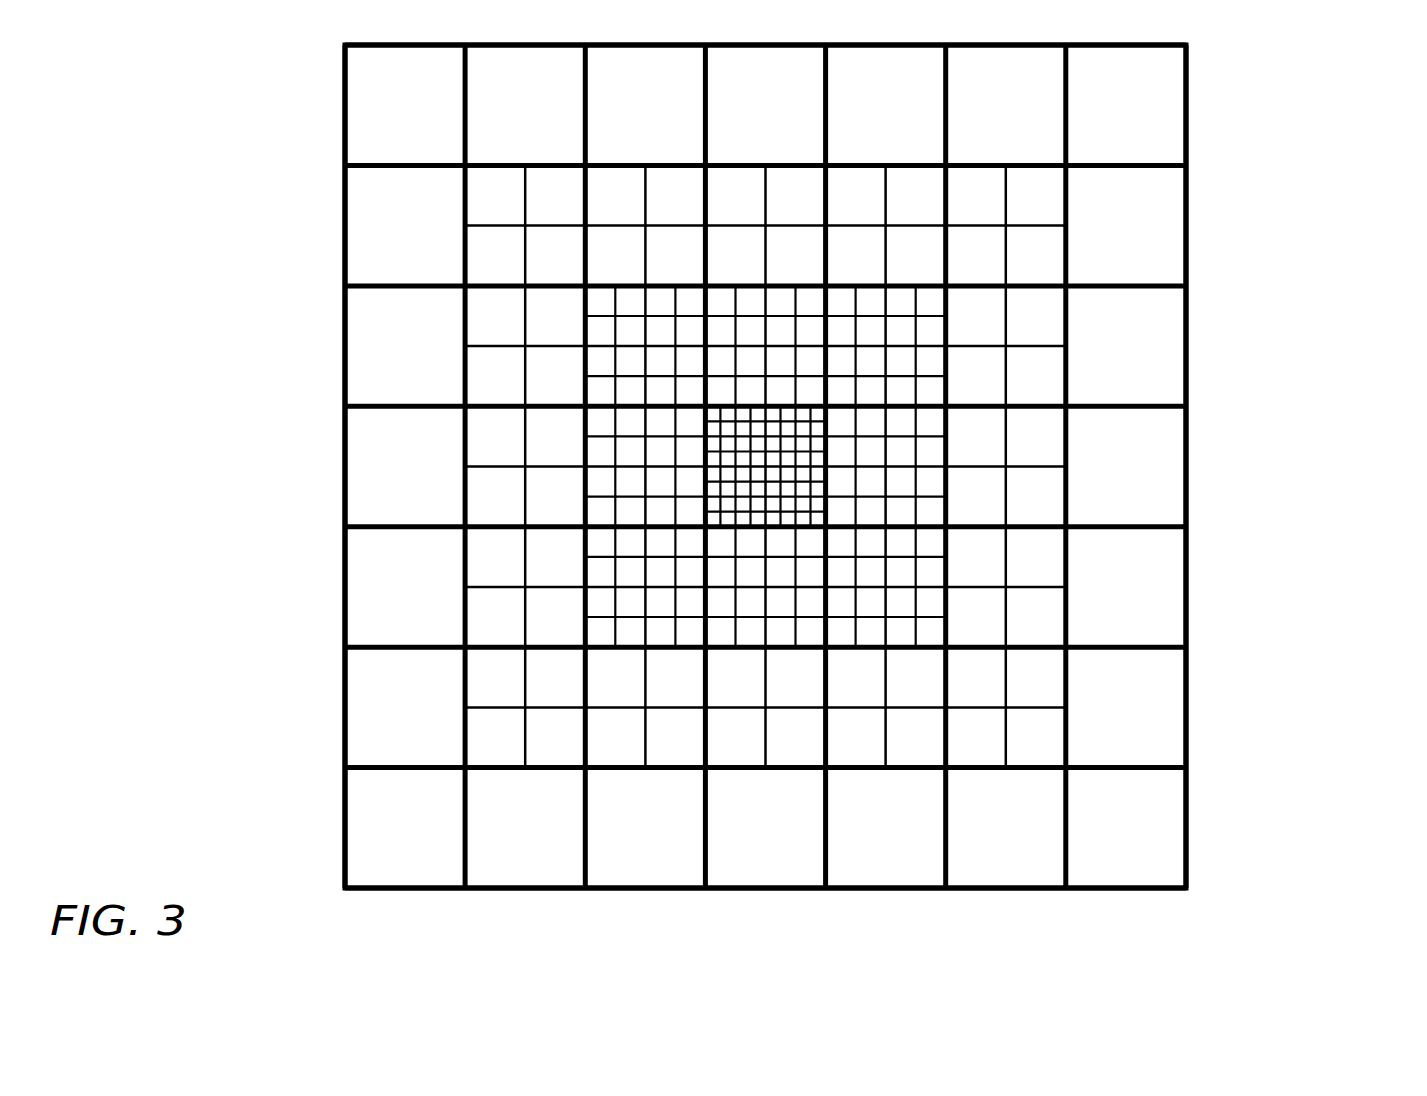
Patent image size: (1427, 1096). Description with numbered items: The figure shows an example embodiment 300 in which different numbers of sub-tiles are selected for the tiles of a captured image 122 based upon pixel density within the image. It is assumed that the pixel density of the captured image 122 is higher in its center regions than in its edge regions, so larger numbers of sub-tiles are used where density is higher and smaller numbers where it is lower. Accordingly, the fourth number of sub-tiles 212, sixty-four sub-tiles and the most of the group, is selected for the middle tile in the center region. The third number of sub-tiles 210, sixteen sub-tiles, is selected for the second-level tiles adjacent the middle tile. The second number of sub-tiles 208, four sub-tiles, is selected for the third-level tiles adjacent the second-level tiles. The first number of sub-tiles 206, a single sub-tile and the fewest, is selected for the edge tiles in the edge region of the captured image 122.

The example embodiment 300 is at (842, 466).
The captured image 122 is at (1188, 120).
The first number of sub-tiles 206 is at (345, 117).
The second number of sub-tiles 208 is at (463, 210).
The third number of sub-tiles 210 is at (584, 335).
The fourth number of sub-tiles 212 is at (705, 458).